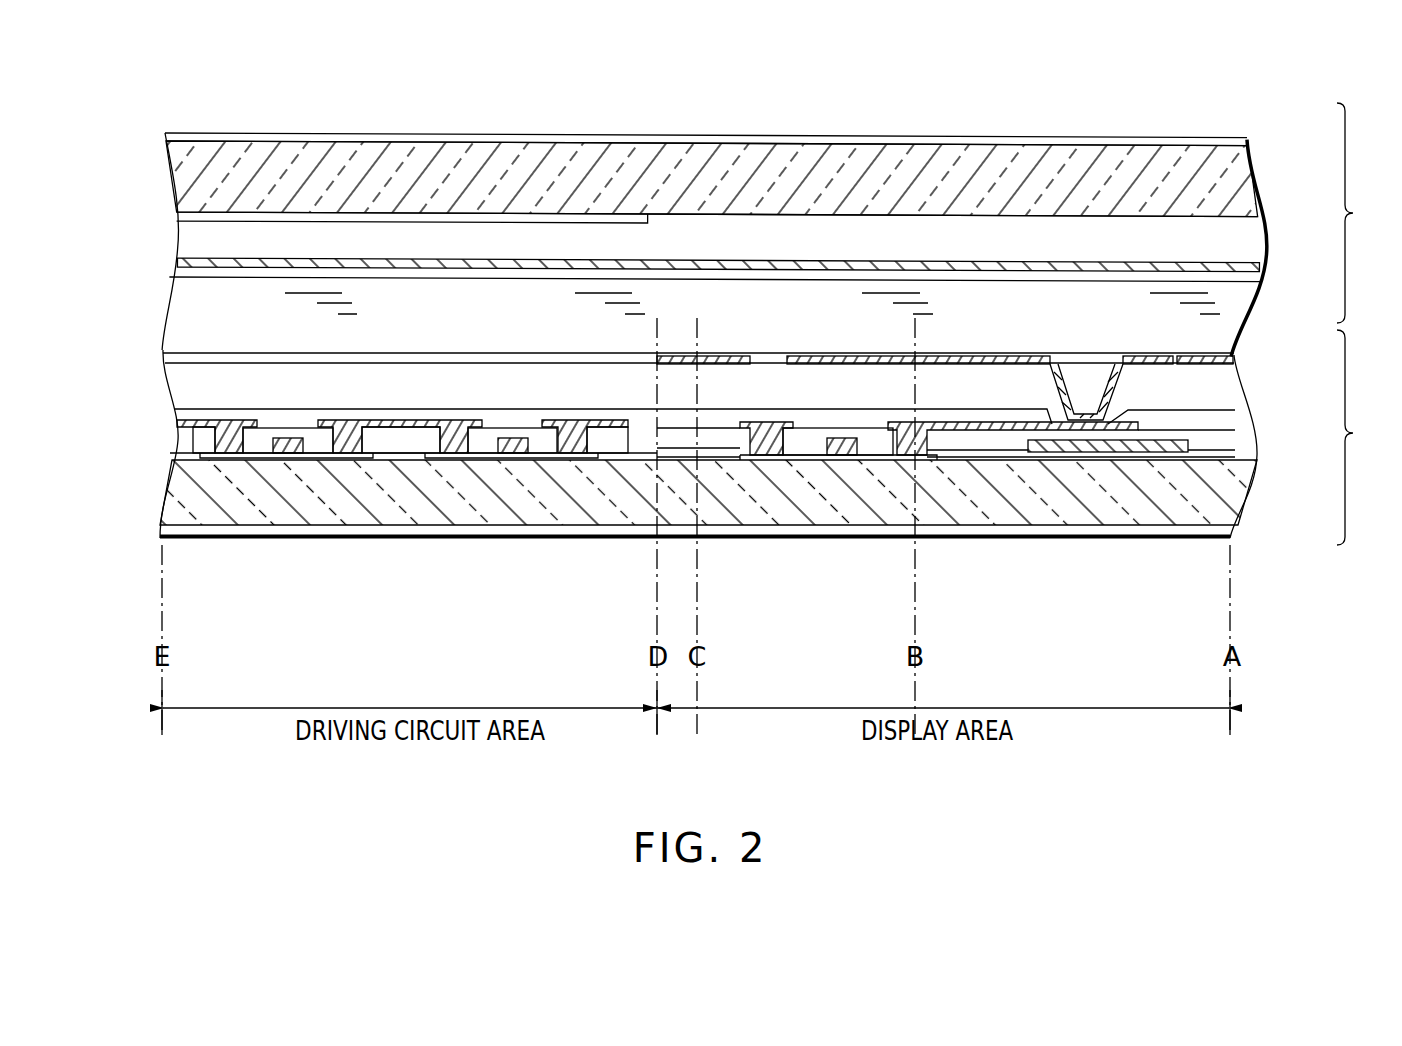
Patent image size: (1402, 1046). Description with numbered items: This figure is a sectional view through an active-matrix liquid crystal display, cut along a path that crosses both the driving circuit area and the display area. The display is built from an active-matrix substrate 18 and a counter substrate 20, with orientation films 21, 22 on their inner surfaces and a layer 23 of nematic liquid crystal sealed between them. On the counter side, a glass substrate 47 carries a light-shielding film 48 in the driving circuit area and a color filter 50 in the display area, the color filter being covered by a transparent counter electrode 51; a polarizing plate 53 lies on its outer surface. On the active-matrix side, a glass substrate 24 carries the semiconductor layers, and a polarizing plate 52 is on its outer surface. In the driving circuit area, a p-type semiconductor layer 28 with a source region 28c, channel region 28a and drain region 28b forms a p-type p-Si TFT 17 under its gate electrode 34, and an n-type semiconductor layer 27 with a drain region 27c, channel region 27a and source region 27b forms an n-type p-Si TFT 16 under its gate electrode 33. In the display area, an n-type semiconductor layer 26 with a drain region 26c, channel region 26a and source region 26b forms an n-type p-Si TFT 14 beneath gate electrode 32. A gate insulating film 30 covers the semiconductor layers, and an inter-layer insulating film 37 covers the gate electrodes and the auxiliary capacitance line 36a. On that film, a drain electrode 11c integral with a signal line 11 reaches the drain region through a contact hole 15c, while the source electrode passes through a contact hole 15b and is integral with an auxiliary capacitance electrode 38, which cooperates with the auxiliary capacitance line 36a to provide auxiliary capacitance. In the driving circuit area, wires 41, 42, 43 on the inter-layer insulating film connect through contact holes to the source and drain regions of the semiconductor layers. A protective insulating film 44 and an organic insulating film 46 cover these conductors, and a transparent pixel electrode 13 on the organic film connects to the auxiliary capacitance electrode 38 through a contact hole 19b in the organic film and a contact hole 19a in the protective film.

The counter substrate 20 is at (1359, 213).
The active-matrix substrate 18 is at (1359, 437).
The polarizing plate 53 is at (1247, 141).
The glass substrate 47 is at (1242, 185).
The light-shielding film 48 is at (178, 217).
The color filter 50 is at (1250, 237).
The counter electrode 51 is at (1252, 268).
The orientation film 22 is at (1245, 280).
The liquid crystal layer 23 is at (178, 300).
The orientation film 21 is at (172, 356).
The organic insulating film 46 is at (185, 387).
The protective insulating film 44 is at (183, 412).
The inter-layer insulating film 37 is at (180, 438).
The gate insulating film 30 is at (195, 455).
The glass substrate 24 is at (178, 493).
The polarizing plate 52 is at (165, 535).
The wire 43 is at (162, 540).
The p-type semiconductor layer 28 is at (291, 538).
The source region 28c is at (253, 460).
The channel region 28a is at (285, 460).
The drain region 28b is at (360, 460).
The gate electrode 34 is at (287, 438).
The n-type semiconductor layer 27 is at (521, 540).
The drain region 27c is at (455, 460).
The channel region 27a is at (505, 460).
The source region 27b is at (555, 458).
The gate electrode 33 is at (515, 438).
The p-type p-Si TFT 17 is at (329, 467).
The n-type p-Si TFT 16 is at (571, 469).
The wire 41 is at (615, 426).
The wire 42 is at (404, 426).
The n-type semiconductor layer 26 is at (826, 538).
The drain region 26c is at (782, 432).
The channel region 26a is at (806, 462).
The source region 26b is at (873, 458).
The gate electrode 32 is at (847, 448).
The signal line 11 is at (752, 425).
The drain electrode 11c is at (752, 460).
The contact hole 15c is at (787, 425).
The contact hole 15b is at (892, 428).
The n-type p-Si TFT 14 is at (890, 471).
The auxiliary capacitance electrode 38 is at (977, 430).
The pixel electrode 13 is at (1002, 368).
The contact hole 19a is at (1113, 423).
The contact hole 19b is at (1087, 368).
The auxiliary capacitance line 36a is at (1160, 447).